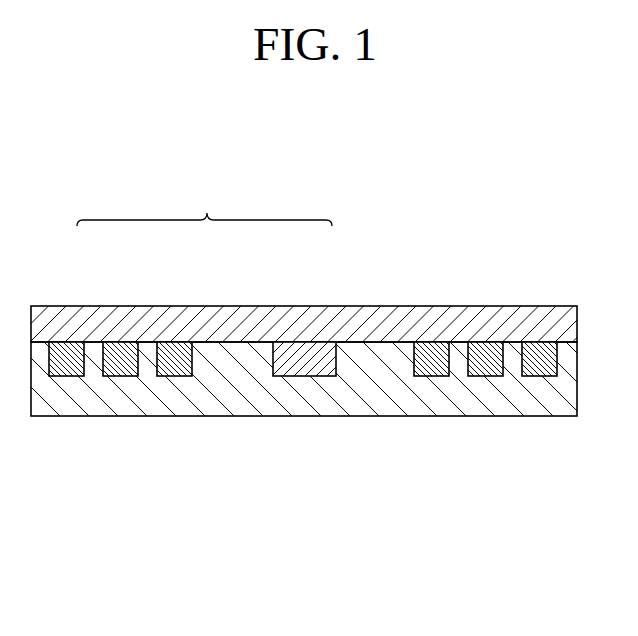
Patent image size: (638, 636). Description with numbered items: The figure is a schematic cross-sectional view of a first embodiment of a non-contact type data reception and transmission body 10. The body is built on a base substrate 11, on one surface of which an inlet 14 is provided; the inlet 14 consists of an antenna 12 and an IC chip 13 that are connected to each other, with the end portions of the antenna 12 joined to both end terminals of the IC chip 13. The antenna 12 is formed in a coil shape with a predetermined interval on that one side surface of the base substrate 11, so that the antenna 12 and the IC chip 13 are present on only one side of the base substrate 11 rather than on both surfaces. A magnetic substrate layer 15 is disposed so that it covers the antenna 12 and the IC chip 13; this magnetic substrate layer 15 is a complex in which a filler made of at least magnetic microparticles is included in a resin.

The non-contact type data reception and transmission body 10 is at (518, 249).
The base substrate 11 is at (108, 325).
The antenna 12 is at (167, 342).
The IC chip 13 is at (298, 353).
The inlet 14 is at (204, 200).
The magnetic substrate layer 15 is at (377, 348).